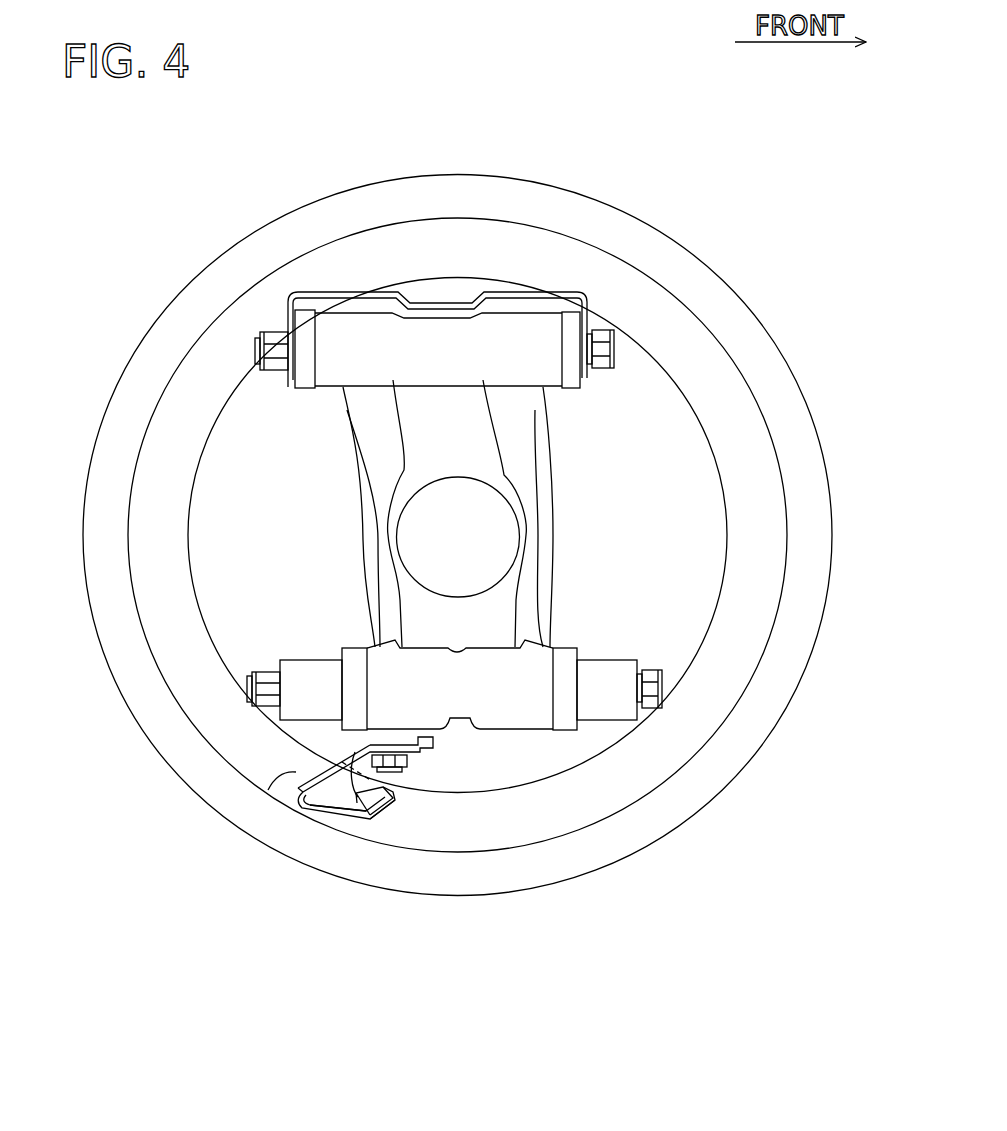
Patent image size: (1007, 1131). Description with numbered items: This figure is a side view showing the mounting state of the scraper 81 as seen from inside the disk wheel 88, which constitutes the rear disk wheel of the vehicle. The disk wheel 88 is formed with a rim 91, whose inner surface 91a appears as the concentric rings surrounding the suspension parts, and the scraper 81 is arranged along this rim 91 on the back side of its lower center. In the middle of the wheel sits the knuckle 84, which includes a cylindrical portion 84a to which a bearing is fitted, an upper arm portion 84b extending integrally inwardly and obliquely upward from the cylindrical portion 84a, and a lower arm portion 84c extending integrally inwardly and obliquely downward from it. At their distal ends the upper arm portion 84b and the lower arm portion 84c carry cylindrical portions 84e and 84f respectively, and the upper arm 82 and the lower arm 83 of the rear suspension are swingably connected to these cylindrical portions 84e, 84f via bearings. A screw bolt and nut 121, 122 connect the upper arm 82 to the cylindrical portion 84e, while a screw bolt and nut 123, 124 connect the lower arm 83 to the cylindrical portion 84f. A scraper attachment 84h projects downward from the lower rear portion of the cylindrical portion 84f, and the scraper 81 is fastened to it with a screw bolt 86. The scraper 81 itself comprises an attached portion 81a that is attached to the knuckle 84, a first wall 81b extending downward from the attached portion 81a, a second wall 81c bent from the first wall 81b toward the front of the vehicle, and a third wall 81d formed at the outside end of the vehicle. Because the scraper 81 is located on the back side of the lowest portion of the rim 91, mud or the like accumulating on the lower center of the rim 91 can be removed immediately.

The scraper 81 is at (302, 819).
The attached portion 81a is at (415, 772).
The first wall 81b is at (300, 790).
The second wall 81c is at (333, 800).
The third wall 81d is at (380, 802).
The upper arm 82 is at (503, 293).
The lower arm 83 is at (605, 708).
The knuckle 84 is at (358, 531).
The cylindrical portion 84a is at (532, 505).
The upper arm portion 84b is at (517, 423).
The lower arm portion 84c is at (502, 610).
The cylindrical portion 84e is at (380, 317).
The cylindrical portion 84f is at (445, 703).
The scraper attachment 84h is at (280, 783).
The screw bolt 86 is at (398, 775).
The disk wheel 88 is at (138, 328).
The rim 91 is at (532, 898).
The inner surface 91a is at (548, 820).
The screw bolt 121 is at (613, 347).
The nut 122 is at (273, 332).
The screw bolt 123 is at (657, 703).
The nut 124 is at (250, 695).